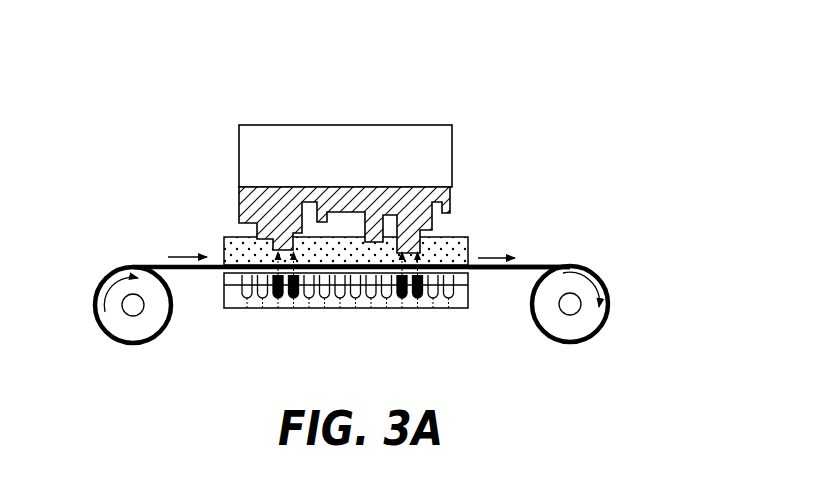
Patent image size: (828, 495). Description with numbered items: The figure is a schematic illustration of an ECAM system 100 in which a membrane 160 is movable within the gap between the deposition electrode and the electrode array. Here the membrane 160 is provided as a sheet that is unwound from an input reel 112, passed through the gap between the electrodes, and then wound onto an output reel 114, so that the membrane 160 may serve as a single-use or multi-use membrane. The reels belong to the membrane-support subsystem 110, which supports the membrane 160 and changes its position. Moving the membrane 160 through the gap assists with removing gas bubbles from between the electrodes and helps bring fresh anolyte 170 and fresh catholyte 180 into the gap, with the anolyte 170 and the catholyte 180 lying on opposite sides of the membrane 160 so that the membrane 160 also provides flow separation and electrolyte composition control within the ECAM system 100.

The ECAM system 100 is at (203, 180).
The membrane-support subsystem 110 is at (137, 257).
The input reel 112 is at (148, 318).
The output reel 114 is at (580, 323).
The membrane 160 is at (535, 265).
The anolyte 170 is at (470, 273).
The catholyte 180 is at (463, 237).